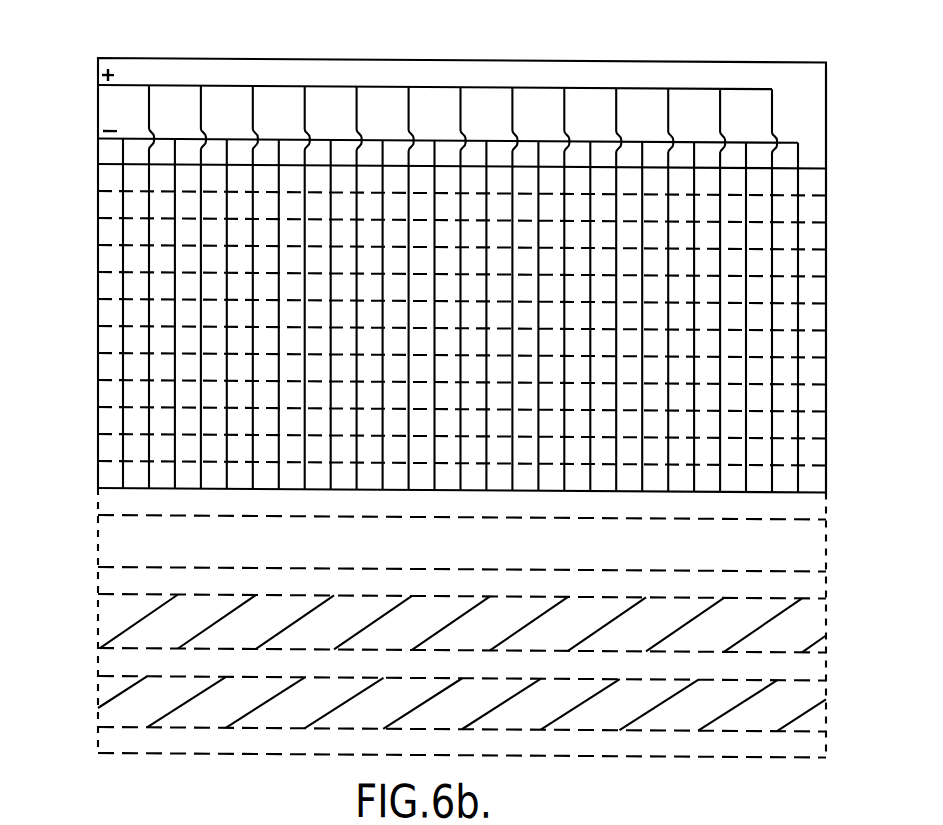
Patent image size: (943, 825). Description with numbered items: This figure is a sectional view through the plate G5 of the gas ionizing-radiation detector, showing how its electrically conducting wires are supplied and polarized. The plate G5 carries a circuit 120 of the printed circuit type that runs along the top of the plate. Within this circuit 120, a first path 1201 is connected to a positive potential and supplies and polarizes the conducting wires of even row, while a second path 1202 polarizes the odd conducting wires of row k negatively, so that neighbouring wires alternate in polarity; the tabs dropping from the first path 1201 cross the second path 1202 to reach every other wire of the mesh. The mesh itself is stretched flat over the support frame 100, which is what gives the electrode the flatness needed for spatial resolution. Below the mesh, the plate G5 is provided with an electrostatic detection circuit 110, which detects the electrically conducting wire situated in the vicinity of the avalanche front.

The support frame 100 is at (98, 368).
The electrostatic detection circuit 110 is at (98, 623).
The circuit of the printed circuit type 120 is at (429, 250).
The first path 1201 is at (285, 85).
The second path 1202 is at (395, 137).
The plate G5 is at (826, 286).